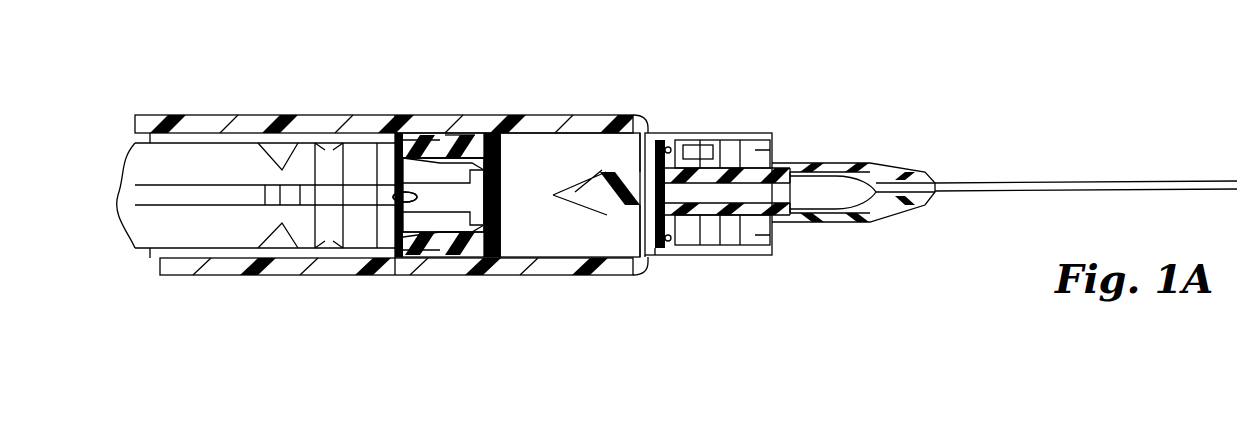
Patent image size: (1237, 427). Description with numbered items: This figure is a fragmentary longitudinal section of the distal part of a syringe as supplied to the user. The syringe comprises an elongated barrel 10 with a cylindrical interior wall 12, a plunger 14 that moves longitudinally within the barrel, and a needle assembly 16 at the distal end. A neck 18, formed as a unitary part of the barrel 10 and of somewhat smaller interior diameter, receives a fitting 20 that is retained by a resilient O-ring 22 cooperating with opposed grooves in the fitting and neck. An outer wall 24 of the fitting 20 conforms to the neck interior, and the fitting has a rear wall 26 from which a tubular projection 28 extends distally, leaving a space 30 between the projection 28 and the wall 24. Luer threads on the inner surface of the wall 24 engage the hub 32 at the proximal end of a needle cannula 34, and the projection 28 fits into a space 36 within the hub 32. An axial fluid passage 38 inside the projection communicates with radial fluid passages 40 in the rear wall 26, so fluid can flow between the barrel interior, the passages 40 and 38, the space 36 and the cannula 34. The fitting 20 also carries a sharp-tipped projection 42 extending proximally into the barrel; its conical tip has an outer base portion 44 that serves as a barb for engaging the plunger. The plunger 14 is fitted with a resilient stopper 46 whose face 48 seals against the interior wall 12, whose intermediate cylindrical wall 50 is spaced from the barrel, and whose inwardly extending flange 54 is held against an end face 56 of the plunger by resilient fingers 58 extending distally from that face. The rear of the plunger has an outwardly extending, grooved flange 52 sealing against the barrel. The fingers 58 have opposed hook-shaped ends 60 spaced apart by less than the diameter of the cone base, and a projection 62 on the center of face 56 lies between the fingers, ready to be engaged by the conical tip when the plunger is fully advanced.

The barrel 10 is at (262, 113).
The cylindrical interior wall 12 is at (628, 110).
The plunger 14 is at (130, 250).
The needle assembly 16 is at (800, 228).
The neck 18 is at (705, 132).
The fitting 20 is at (785, 134).
The O-ring 22 is at (690, 255).
The outer wall 24 is at (740, 252).
The rear wall 26 is at (668, 256).
The tubular projection 28 is at (778, 172).
The space 30 is at (690, 132).
The hub 32 is at (853, 222).
The needle cannula 34 is at (1045, 182).
The space 36 is at (898, 178).
The axial fluid passage 38 is at (860, 165).
The radial fluid passages 40 is at (640, 125).
The sharp-tipped projection 42 is at (500, 192).
The outer portion of the cone base 44 is at (562, 197).
The stopper 46 is at (493, 258).
The face 48 is at (525, 115).
The cylindrical wall 50 is at (472, 130).
The outwardly extending flange 52 is at (393, 115).
The inwardly extending flange 54 is at (445, 130).
The end face 56 is at (408, 258).
The resilient fingers 58 is at (480, 130).
The hook-shaped ends 60 is at (503, 170).
The projection 62 is at (405, 193).